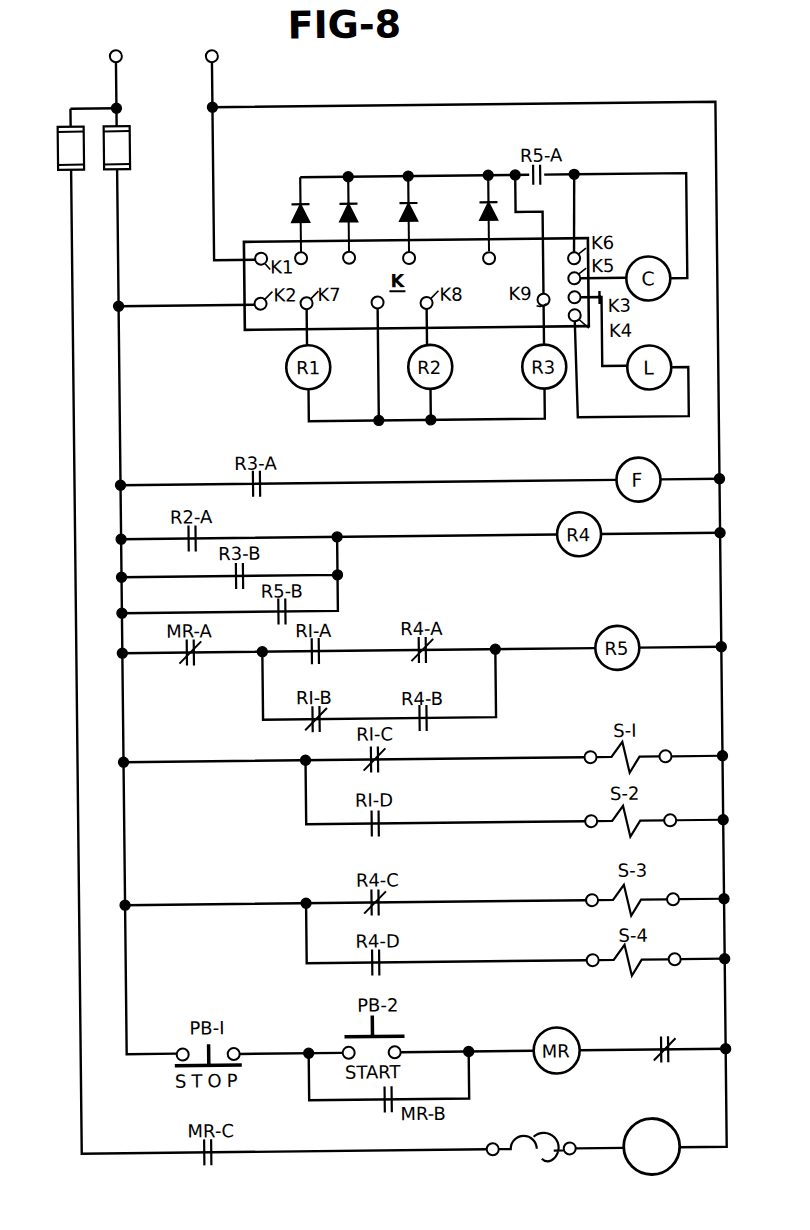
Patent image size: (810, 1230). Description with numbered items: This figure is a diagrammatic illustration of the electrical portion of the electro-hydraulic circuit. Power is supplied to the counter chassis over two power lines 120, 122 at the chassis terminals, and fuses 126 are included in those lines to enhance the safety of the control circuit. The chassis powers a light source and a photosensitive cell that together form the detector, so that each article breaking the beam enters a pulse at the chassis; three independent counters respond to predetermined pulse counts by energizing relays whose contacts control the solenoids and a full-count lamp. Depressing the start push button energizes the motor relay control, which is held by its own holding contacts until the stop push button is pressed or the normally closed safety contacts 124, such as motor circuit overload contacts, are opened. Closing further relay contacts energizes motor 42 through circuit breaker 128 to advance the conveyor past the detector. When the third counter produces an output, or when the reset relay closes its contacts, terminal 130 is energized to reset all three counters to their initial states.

The power line 120 is at (124, 69).
The power line 122 is at (224, 63).
The fuse 126 is at (72, 143).
The terminal 130 is at (518, 173).
The safety contacts 124 is at (653, 1044).
The circuit breaker 128 is at (527, 1167).
The motor 42 is at (649, 1163).